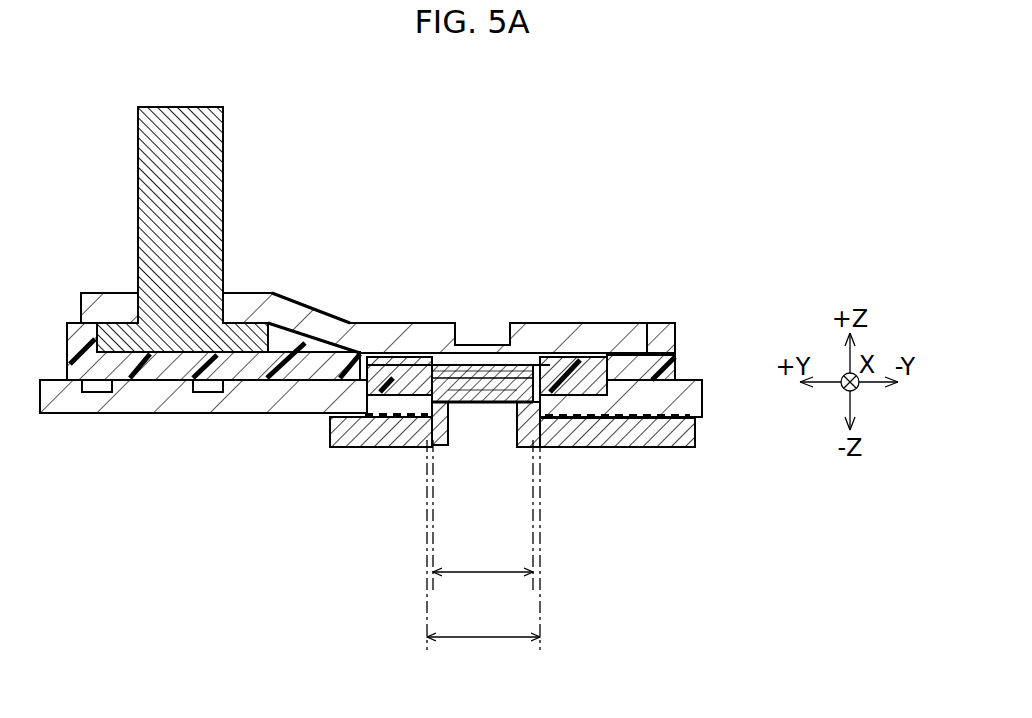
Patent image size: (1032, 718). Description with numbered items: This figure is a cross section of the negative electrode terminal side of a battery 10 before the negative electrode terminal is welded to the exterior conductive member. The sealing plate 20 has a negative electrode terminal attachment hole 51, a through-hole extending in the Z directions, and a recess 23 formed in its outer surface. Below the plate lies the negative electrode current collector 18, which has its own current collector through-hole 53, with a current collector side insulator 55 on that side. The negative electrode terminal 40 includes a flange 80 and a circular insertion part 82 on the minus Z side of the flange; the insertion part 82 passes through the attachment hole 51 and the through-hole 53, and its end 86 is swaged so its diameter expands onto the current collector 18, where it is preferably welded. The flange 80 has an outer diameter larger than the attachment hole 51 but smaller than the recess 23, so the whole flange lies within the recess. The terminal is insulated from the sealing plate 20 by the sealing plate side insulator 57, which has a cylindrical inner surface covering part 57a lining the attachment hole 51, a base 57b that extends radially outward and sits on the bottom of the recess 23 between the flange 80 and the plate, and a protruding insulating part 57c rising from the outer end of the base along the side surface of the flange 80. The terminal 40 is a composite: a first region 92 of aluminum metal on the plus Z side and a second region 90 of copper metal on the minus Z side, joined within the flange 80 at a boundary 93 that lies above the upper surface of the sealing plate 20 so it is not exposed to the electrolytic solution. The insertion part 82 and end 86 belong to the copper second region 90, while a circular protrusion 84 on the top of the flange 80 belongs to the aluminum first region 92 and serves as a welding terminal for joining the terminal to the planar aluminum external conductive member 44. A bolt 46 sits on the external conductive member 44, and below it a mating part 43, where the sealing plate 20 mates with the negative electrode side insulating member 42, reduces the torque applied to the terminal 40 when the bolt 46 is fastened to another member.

The liquid ejecting head 10 is at (676, 244).
The negative electrode current collector 18 is at (630, 450).
The sealing plate 20 is at (690, 397).
The recess 23 is at (625, 352).
The negative electrode terminal 40 is at (428, 246).
The negative electrode side insulating member 42 is at (150, 372).
The mating part 43 is at (208, 390).
The external conductive member 44 is at (323, 326).
The bolt 46 is at (138, 196).
The negative electrode terminal attachment hole 51 is at (486, 640).
The current collector through-hole 53 is at (486, 575).
The current collector side insulator 55 is at (332, 424).
The sealing plate side insulator 57 is at (360, 447).
The inner surface covering part 57a is at (374, 447).
The base 57b is at (410, 362).
The protruding insulating part 57c is at (380, 357).
The flange 80 is at (480, 365).
The circular insertion part 82 is at (500, 368).
The protrusion 84 is at (517, 330).
The end 86 is at (423, 450).
The second region 90 is at (500, 404).
The first region 92 is at (470, 404).
The boundary 93 is at (568, 450).